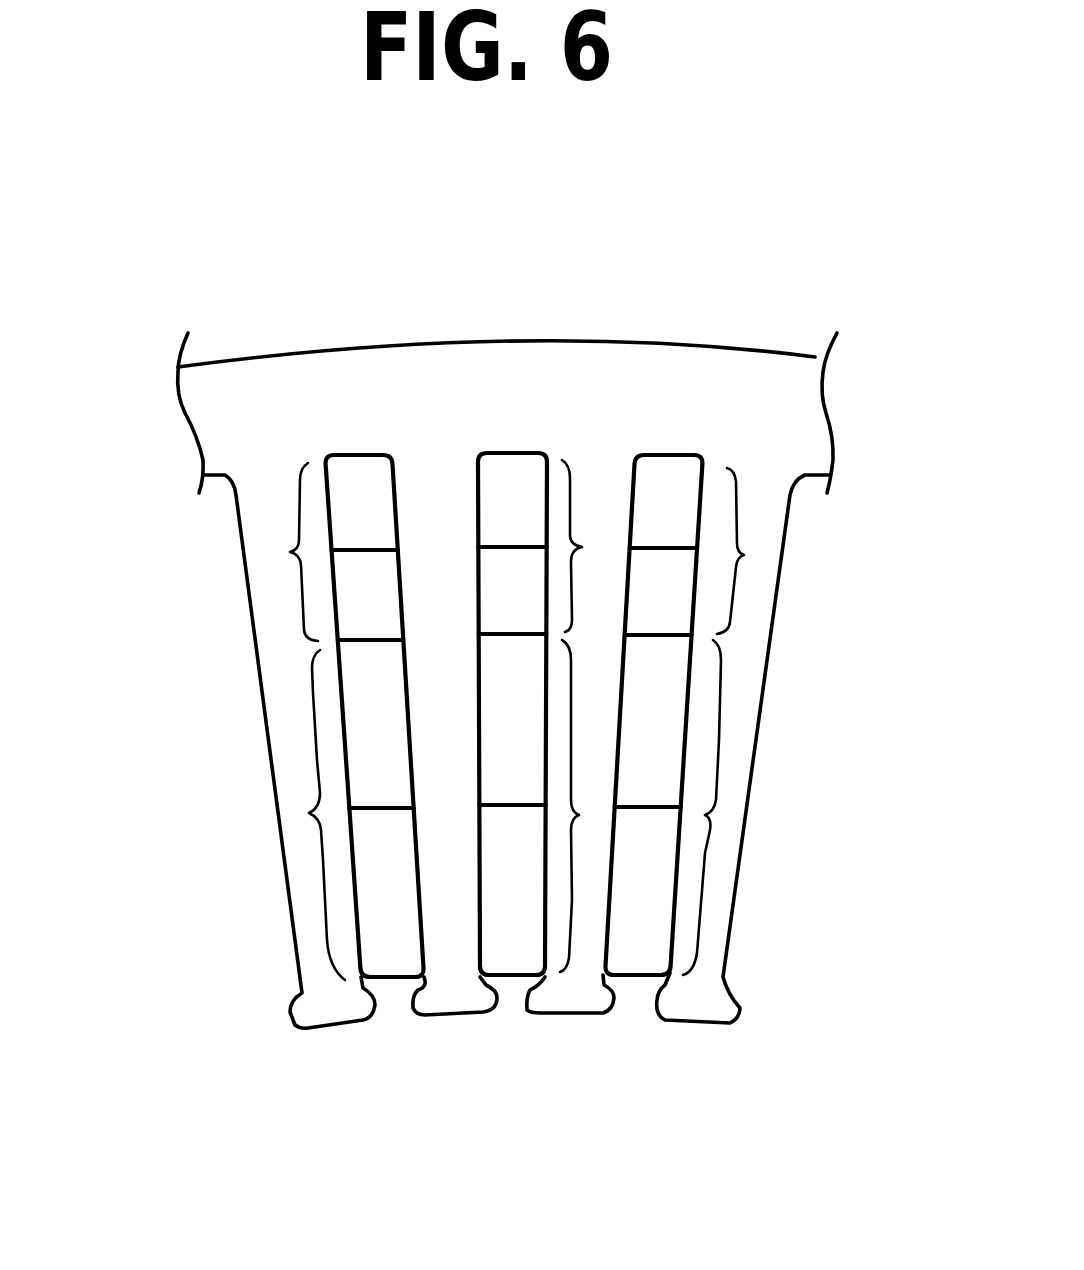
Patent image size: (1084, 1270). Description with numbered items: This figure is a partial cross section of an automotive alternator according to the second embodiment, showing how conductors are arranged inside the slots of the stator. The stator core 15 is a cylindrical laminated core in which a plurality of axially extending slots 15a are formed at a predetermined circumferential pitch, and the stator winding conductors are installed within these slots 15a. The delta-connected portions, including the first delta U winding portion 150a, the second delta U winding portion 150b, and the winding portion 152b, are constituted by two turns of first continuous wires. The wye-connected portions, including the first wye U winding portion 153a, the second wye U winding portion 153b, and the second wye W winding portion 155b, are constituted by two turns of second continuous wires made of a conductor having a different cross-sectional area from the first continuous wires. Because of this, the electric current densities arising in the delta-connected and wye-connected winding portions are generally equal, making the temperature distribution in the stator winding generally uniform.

The stator core 15 is at (678, 377).
The slot 15a is at (417, 905).
The first delta U winding portion 150a is at (590, 542).
The second delta U winding portion 150b is at (753, 553).
The delta winding portion 152b is at (282, 553).
The first wye U winding portion 153a is at (589, 818).
The second wye U winding portion 153b is at (727, 805).
The second wye W winding portion 155b is at (300, 808).